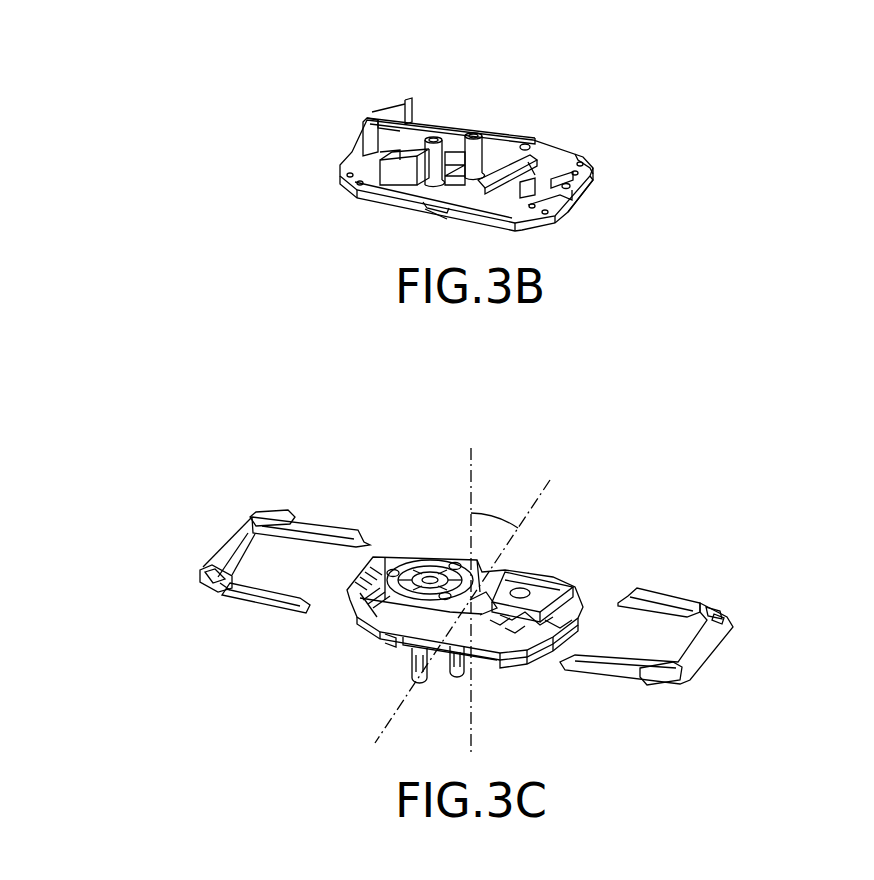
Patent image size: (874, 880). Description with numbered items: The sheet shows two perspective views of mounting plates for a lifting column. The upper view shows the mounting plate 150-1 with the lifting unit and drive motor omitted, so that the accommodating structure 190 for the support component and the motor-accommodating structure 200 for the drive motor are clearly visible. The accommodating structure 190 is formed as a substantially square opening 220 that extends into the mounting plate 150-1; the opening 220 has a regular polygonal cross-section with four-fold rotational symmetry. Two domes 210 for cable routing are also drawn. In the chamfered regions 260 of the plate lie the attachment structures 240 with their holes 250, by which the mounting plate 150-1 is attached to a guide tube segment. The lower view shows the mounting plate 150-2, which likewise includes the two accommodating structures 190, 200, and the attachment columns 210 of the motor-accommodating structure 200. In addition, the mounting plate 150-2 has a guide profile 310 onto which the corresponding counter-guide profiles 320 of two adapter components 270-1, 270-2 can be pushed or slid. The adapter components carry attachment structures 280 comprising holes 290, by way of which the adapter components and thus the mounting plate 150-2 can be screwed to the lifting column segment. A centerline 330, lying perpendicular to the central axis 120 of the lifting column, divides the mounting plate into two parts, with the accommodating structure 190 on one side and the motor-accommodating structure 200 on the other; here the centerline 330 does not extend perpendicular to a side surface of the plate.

In FIG. 3B, the mounting plate 150-1 is at (717, 77).
In FIG. 3C, the mounting plate 150-2 is at (539, 549).
In FIG. 3B, the motor-accommodating structure 200 is at (499, 156).
In FIG. 3C, the motor-accommodating structure 200 is at (427, 553).
In FIG. 3B, the domes 210 is at (480, 147).
In FIG. 3C, the domes 210 is at (452, 663).
In FIG. 3B, the opening 220 is at (427, 140).
In FIG. 3B, the accommodating structure 190 is at (449, 127).
In FIG. 3C, the accommodating structure 190 is at (526, 593).
In FIG. 3B, the attachment structures 240 is at (577, 157).
In FIG. 3B, the holes 250 is at (590, 177).
In FIG. 3B, the chamfered regions 260 is at (604, 158).
In FIG. 3C, the adapter component 270-1 is at (677, 597).
In FIG. 3C, the adapter component 270-2 is at (325, 520).
In FIG. 3C, the attachment structures 280 is at (270, 515).
In FIG. 3C, the holes 290 is at (220, 583).
In FIG. 3C, the guide profile 310 is at (393, 637).
In FIG. 3C, the counter-guide profiles 320 is at (703, 650).
In FIG. 3C, the centerline 330 is at (533, 502).
In FIG. 3C, the central axis 120 is at (470, 738).